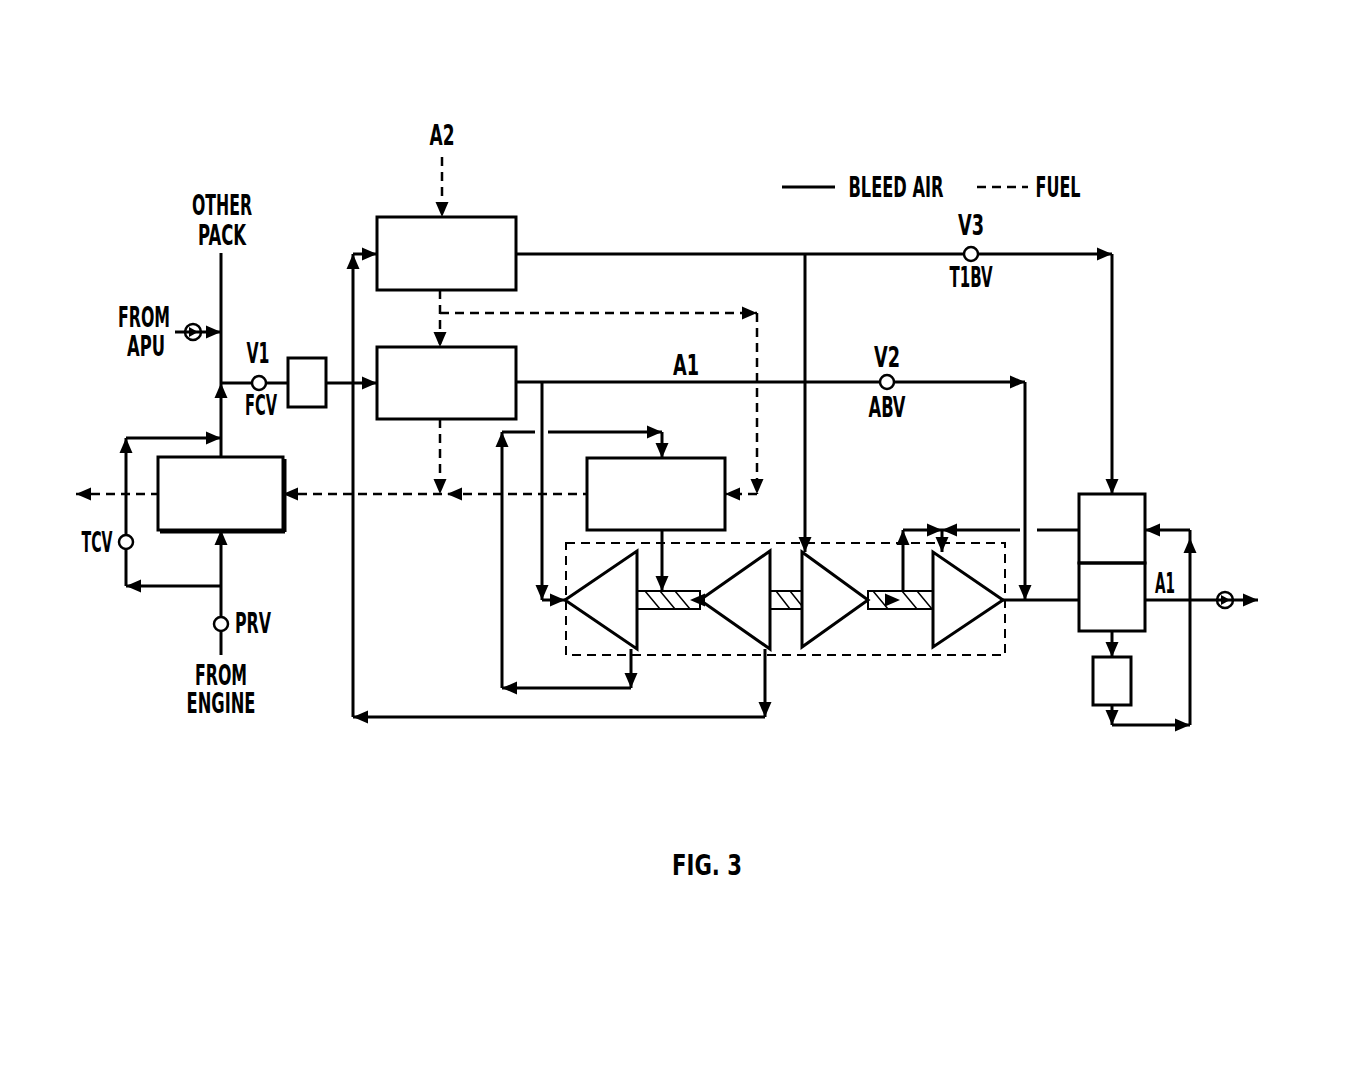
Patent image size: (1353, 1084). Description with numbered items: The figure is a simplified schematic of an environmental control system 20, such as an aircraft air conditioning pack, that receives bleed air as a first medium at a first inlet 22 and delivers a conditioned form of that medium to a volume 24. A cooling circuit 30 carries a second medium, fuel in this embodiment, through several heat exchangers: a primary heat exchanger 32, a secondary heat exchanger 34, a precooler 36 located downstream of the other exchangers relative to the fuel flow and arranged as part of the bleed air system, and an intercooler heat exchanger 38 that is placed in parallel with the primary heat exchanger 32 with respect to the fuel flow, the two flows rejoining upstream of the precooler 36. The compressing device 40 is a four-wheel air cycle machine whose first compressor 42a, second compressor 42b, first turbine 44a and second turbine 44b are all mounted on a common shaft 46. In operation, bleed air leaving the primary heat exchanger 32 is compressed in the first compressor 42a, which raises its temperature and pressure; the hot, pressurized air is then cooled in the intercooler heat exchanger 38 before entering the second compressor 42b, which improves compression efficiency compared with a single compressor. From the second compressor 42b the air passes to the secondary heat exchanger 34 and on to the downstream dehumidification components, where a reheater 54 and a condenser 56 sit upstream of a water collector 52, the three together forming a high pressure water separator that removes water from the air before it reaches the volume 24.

The environmental control system 20 is at (1158, 232).
The first inlet 22 is at (226, 383).
The volume 24 is at (1236, 618).
The cooling circuit 30 is at (522, 198).
The primary heat exchanger 32 is at (483, 416).
The secondary heat exchanger 34 is at (483, 286).
The precooler 36 is at (208, 522).
The intercooler heat exchanger 38 is at (695, 524).
The compressing device 40 is at (865, 542).
The first compressor 42a is at (592, 603).
The second compressor 42b is at (723, 610).
The first turbine 44a is at (813, 620).
The second turbine 44b is at (950, 625).
The shaft 46 is at (908, 606).
The water collector 52 is at (1093, 684).
The reheater 54 is at (1130, 508).
The condenser 56 is at (1090, 613).